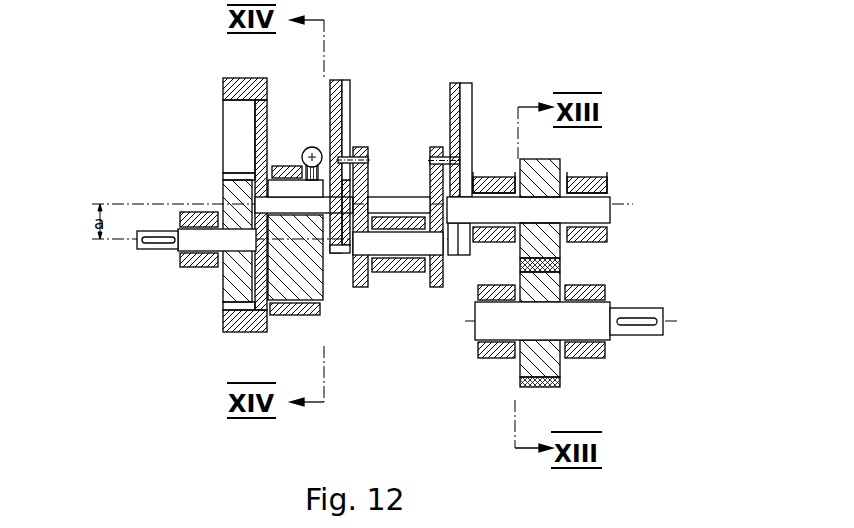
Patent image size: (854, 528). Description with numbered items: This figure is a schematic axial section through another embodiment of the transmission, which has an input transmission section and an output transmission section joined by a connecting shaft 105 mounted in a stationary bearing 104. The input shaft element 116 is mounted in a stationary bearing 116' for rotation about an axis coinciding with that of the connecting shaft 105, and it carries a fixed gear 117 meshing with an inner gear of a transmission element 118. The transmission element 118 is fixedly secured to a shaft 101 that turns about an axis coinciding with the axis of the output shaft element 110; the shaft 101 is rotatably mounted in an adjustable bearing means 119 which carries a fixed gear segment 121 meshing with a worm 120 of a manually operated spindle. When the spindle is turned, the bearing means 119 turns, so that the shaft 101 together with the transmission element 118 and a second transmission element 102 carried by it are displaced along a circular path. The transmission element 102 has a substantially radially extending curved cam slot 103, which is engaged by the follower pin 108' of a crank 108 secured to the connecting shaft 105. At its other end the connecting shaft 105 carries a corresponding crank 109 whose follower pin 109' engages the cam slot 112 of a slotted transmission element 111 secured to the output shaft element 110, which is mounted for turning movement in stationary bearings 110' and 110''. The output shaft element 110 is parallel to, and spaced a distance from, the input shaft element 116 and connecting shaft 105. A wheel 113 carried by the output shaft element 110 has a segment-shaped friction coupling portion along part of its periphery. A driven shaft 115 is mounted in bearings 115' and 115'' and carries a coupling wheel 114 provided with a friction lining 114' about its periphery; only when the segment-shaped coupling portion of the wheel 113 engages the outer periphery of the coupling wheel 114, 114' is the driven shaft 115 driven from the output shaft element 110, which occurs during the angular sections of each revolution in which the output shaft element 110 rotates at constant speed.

The shaft 101 is at (272, 203).
The transmission element 102 is at (340, 118).
The cam slot 103 is at (350, 95).
The stationary bearing 104 is at (380, 221).
The connecting shaft 105 is at (399, 246).
The crank 108 is at (379, 217).
The follower pin 108' is at (367, 136).
The crank 109 is at (421, 186).
The follower pin 109' is at (442, 111).
The output shaft element 110 is at (555, 225).
The stationary bearing 110' is at (494, 224).
The stationary bearing 110'' is at (592, 224).
The slotted transmission element 111 is at (470, 136).
The cam slot 112 is at (462, 83).
The wheel 113 is at (560, 170).
The coupling wheel 114 is at (560, 351).
The friction lining 114' is at (524, 344).
The driven shaft 115 is at (596, 317).
The bearing 115' is at (491, 341).
The bearing 115'' is at (604, 335).
The input shaft element 116 is at (178, 265).
The stationary bearing 116' is at (190, 261).
The fixed gear 117 is at (226, 298).
The transmission element 118 is at (223, 88).
The bearing means 119 is at (318, 292).
The worm 120 is at (313, 147).
The gear segment 121 is at (303, 157).